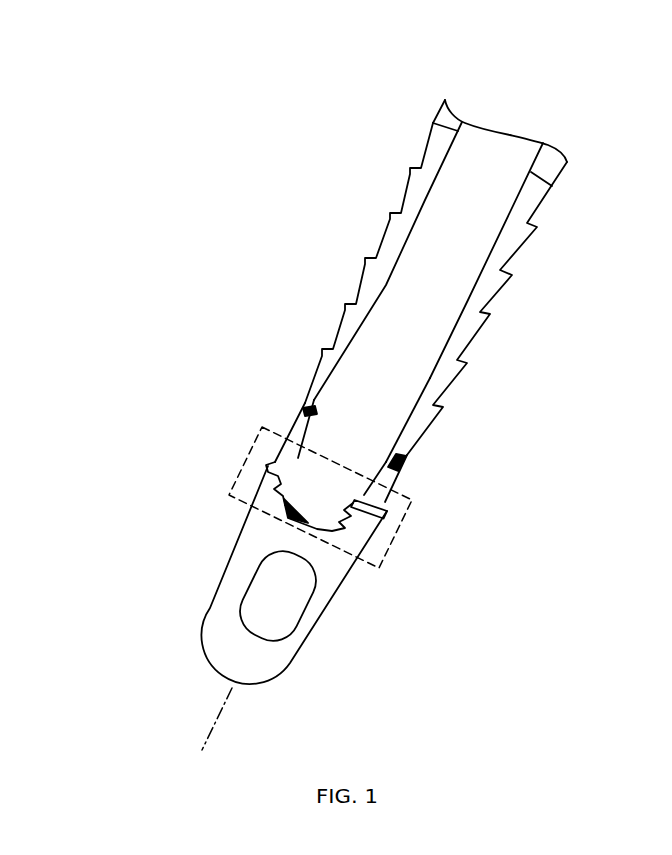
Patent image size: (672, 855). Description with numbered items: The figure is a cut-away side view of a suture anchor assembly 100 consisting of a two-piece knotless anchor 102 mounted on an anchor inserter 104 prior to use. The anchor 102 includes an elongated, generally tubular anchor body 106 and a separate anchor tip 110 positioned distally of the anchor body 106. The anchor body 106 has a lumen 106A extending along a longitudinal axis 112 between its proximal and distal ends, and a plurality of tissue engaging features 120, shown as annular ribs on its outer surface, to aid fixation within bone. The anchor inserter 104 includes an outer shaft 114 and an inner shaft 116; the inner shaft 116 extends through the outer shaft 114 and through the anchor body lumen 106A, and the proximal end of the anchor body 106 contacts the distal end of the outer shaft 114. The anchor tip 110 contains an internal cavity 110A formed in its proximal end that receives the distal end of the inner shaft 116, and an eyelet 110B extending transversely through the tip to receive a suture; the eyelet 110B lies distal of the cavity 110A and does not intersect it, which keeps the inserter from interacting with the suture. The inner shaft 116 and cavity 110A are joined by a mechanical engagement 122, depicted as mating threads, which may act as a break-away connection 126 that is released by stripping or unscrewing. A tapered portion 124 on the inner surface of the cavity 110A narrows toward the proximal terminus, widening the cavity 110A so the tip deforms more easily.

The suture anchor assembly 100 is at (182, 240).
The anchor 102 is at (344, 312).
The anchor inserter 104 is at (442, 118).
The anchor body 106 is at (319, 361).
The lumen 106A is at (418, 413).
The anchor tip 110 is at (345, 578).
The cavity 110A is at (336, 537).
The eyelet 110B is at (258, 600).
The longitudinal axis 112 is at (213, 732).
The outer shaft 114 is at (547, 167).
The inner shaft 116 is at (423, 318).
The tissue engaging features 120 is at (392, 227).
The mechanical engagement 122 is at (413, 505).
The tapered portion 124 is at (301, 414).
The break-away connection 126 is at (268, 467).